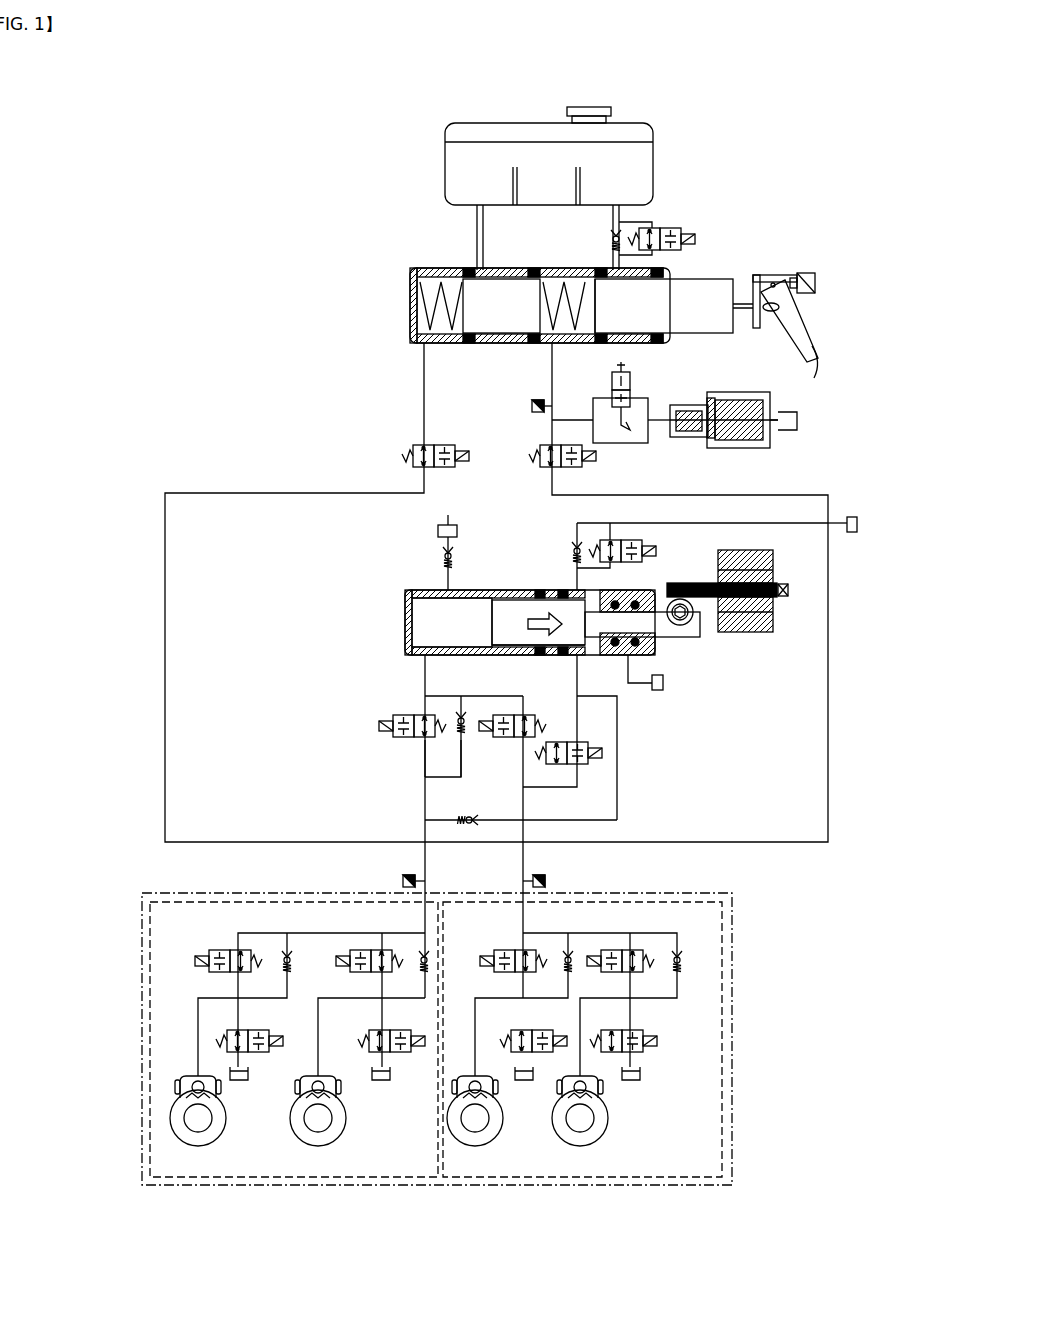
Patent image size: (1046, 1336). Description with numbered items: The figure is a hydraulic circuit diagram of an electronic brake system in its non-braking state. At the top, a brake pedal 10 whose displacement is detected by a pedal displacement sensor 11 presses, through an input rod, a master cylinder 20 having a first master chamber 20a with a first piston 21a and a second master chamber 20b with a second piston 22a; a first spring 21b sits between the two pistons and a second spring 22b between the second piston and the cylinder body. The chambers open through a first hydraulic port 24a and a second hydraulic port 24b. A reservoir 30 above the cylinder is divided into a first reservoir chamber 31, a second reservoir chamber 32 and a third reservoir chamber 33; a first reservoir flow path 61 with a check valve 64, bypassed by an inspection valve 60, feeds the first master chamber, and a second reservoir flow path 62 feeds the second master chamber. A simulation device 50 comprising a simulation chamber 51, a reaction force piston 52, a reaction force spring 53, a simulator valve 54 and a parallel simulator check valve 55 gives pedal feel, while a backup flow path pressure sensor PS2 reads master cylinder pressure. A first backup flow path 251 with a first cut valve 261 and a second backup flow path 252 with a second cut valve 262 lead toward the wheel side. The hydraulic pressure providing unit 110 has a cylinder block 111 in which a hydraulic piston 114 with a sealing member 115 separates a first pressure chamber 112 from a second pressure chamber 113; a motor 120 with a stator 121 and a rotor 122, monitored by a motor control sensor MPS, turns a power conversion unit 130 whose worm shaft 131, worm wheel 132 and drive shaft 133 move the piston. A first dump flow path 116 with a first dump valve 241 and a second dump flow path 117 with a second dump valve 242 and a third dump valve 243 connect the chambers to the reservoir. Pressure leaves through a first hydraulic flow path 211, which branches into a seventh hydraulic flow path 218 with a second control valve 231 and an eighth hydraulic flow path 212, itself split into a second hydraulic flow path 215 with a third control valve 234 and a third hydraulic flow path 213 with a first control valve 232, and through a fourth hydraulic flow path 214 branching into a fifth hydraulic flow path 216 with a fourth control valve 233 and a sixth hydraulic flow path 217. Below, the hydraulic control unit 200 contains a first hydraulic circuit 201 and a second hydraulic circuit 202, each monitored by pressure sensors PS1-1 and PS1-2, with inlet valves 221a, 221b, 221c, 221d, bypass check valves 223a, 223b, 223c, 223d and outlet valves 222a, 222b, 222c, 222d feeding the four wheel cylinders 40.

The brake pedal 10 is at (790, 316).
The pedal displacement sensor 11 is at (812, 273).
The master cylinder 20 is at (410, 283).
The first master chamber 20a is at (578, 280).
The second master chamber 20b is at (463, 276).
The first piston 21a is at (727, 282).
The first spring 21b is at (581, 332).
The second piston 22a is at (520, 282).
The second spring 22b is at (430, 306).
The first hydraulic port 24a is at (545, 343).
The second hydraulic port 24b is at (418, 338).
The reservoir 30 is at (445, 142).
The first reservoir chamber 31 is at (631, 165).
The second reservoir chamber 32 is at (537, 165).
The third reservoir chamber 33 is at (472, 165).
The wheel cylinder 40 is at (186, 1082).
The simulation device 50 is at (724, 395).
The simulation chamber 51 is at (740, 392).
The reaction force piston 52 is at (690, 405).
The reaction force spring 53 is at (708, 398).
The simulator valve 54 is at (630, 376).
The simulator check valve 55 is at (644, 440).
The inspection valve 60 is at (688, 237).
The first reservoir flow path 61 is at (619, 214).
The second reservoir flow path 62 is at (477, 214).
The check valve 64 is at (612, 240).
The hydraulic pressure providing unit 110 is at (500, 612).
The cylinder block 111 is at (410, 616).
The first pressure chamber 112 is at (422, 636).
The second pressure chamber 113 is at (628, 662).
The hydraulic piston 114 is at (505, 616).
The sealing member 115 is at (525, 635).
The first dump flow path 116 is at (450, 580).
The second dump flow path 117 is at (806, 523).
The motor 120 is at (765, 565).
The stator 121 is at (773, 625).
The rotor 122 is at (773, 605).
The power conversion unit 130 is at (681, 604).
The worm shaft 131 is at (675, 583).
The worm wheel 132 is at (693, 622).
The drive shaft 133 is at (688, 637).
The motor control sensor MPS is at (786, 584).
The hydraulic control unit 200 is at (437, 1068).
The first hydraulic circuit 201 is at (582, 1185).
The second hydraulic circuit 202 is at (292, 1185).
The first hydraulic flow path 211 is at (425, 680).
The eighth hydraulic flow path 212 is at (446, 696).
The third hydraulic flow path 213 is at (461, 762).
The fourth hydraulic flow path 214 is at (577, 690).
The second hydraulic flow path 215 is at (489, 696).
The fifth hydraulic flow path 216 is at (617, 717).
The sixth hydraulic flow path 217 is at (600, 820).
The seventh hydraulic flow path 218 is at (425, 760).
The inlet valve 221a is at (612, 950).
The inlet valve 221b is at (500, 950).
The inlet valve 221c is at (365, 950).
The inlet valve 221d is at (226, 950).
The outlet valve 222a is at (640, 1032).
The outlet valve 222b is at (522, 1032).
The outlet valve 222c is at (380, 1030).
The outlet valve 222d is at (255, 1030).
The check valve 223a is at (675, 950).
The check valve 223b is at (568, 961).
The check valve 223c is at (420, 950).
The check valve 223d is at (288, 950).
The second control valve 231 is at (400, 738).
The first control valve 232 is at (455, 718).
The fourth control valve 233 is at (590, 745).
The third control valve 234 is at (520, 714).
The first dump valve 241 is at (444, 556).
The second dump valve 242 is at (572, 548).
The third dump valve 243 is at (614, 538).
The first backup flow path 251 is at (552, 386).
The second backup flow path 252 is at (424, 374).
The first cut valve 261 is at (540, 444).
The second cut valve 262 is at (413, 444).
The hydraulic flow path pressure sensor PS1-1 is at (545, 881).
The hydraulic flow path pressure sensor PS1-2 is at (403, 881).
The backup flow path pressure sensor PS2 is at (532, 406).